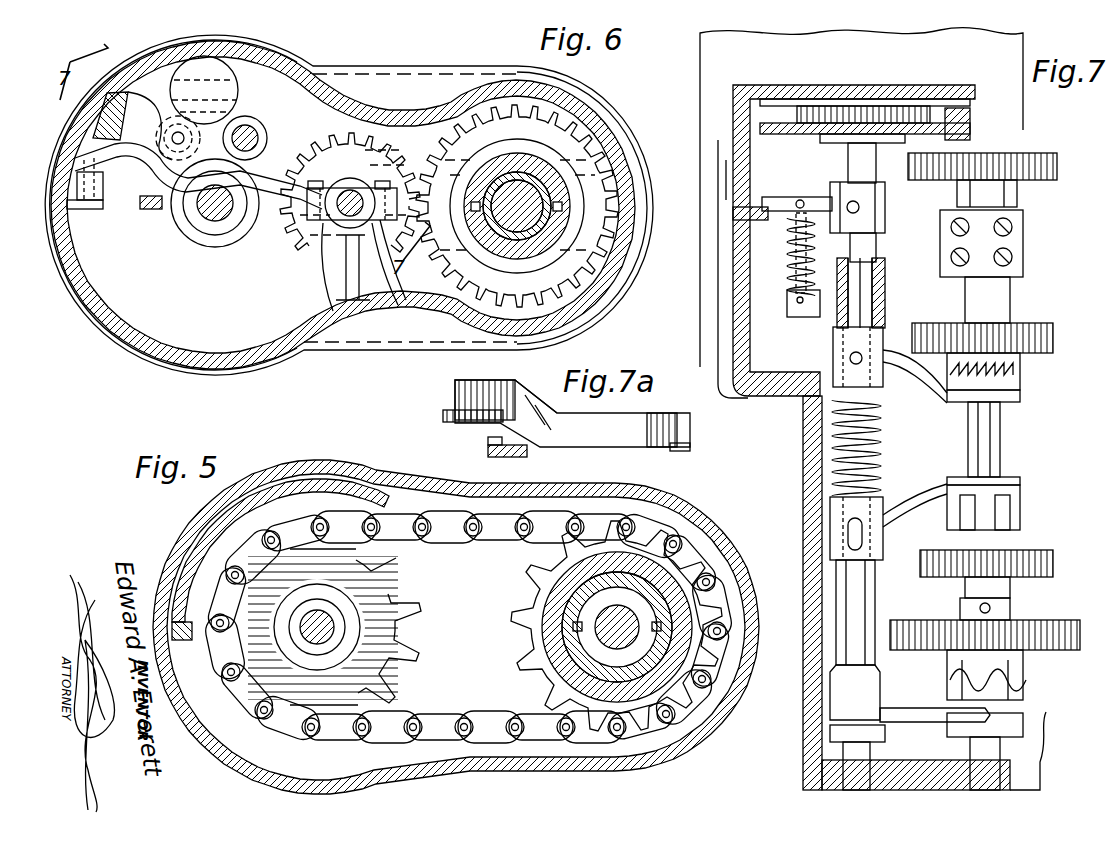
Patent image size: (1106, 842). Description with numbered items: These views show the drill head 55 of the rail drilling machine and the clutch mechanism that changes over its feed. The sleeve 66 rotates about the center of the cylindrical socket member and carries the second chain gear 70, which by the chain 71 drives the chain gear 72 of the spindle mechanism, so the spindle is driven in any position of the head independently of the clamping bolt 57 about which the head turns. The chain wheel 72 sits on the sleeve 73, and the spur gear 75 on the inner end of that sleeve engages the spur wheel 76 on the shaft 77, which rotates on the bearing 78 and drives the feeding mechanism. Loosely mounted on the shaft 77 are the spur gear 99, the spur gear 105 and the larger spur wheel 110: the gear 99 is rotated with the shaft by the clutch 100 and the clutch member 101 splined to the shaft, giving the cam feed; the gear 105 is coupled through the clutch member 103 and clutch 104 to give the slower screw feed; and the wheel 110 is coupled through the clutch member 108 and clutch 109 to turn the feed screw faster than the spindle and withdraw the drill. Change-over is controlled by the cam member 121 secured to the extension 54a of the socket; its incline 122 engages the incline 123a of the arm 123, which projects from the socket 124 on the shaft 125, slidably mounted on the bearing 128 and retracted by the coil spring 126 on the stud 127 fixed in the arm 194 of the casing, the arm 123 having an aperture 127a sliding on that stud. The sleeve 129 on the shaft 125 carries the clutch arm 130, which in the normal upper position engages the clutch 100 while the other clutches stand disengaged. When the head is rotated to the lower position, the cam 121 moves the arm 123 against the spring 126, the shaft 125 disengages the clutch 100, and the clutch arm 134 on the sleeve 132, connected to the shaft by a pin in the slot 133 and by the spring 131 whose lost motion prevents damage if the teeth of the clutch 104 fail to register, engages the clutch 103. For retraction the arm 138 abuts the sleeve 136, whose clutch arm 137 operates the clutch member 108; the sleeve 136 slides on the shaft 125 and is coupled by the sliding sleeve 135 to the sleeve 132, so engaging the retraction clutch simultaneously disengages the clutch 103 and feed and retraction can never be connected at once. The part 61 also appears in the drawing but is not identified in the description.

In FIG. 6, the extension of the socket 54a is at (74, 210).
In FIG. 5, the extension of the socket 54a is at (210, 524).
In FIG. 7, the extension of the socket 54a is at (733, 165).
In FIG. 6, the drill head 55 is at (435, 66).
In FIG. 5, the drill head 55 is at (550, 486).
In FIG. 7, the drill head 55 is at (728, 326).
In FIG. 6, the clamping bolt 57 is at (213, 224).
In FIG. 5, the clamping bolt 57 is at (321, 645).
In FIG. 7, the clamping bolt 57 is at (855, 158).
In FIG. 7, the support bracket 61 is at (803, 430).
In FIG. 5, the sleeve 66 is at (346, 648).
In FIG. 5, the second chain gear 70 is at (334, 627).
In FIG. 7, the second chain gear 70 is at (865, 131).
In FIG. 5, the chain 71 is at (428, 540).
In FIG. 5, the chain gear 72 is at (508, 600).
In FIG. 6, the sleeve 73 is at (492, 186).
In FIG. 5, the sleeve 73 is at (545, 624).
In FIG. 6, the spur gear 75 is at (517, 206).
In FIG. 6, the spur wheel 76 is at (350, 192).
In FIG. 7, the spur wheel 76 is at (1057, 166).
In FIG. 6, the shaft 77 is at (348, 198).
In FIG. 7, the shaft 77 is at (1000, 446).
In FIG. 6, the bearing 78 is at (307, 212).
In FIG. 7, the bearing 78 is at (1023, 243).
In FIG. 7, the spur gear 99 is at (1053, 342).
In FIG. 7, the clutch 100 is at (1020, 371).
In FIG. 7, the clutch member 101 is at (1020, 396).
In FIG. 7, the clutch member 103 is at (1020, 482).
In FIG. 7, the clutch 104 is at (1020, 515).
In FIG. 7, the spur gear 105 is at (1045, 558).
In FIG. 7, the clutch member 108 is at (1023, 718).
In FIG. 7, the clutch 109 is at (1023, 680).
In FIG. 7, the spur wheel 110 is at (1075, 624).
In FIG. 6, the cam member 121 is at (163, 187).
In FIG. 7A, the cam member 121 is at (572, 415).
In FIG. 5, the cam member 121 is at (186, 641).
In FIG. 7, the cam member 121 is at (733, 214).
In FIG. 6, the incline 122 is at (106, 118).
In FIG. 7A, the incline 122 is at (540, 422).
In FIG. 6, the arm 123 is at (152, 211).
In FIG. 7A, the arm 123 is at (488, 452).
In FIG. 7, the arm 123 is at (778, 197).
In FIG. 7A, the incline 123a is at (488, 440).
In FIG. 7, the socket 124 is at (885, 207).
In FIG. 6, the shaft 125 is at (256, 138).
In FIG. 7, the shaft 125 is at (876, 246).
In FIG. 7, the coil spring 126 is at (786, 239).
In FIG. 6, the stud 127 is at (180, 136).
In FIG. 7, the stud 127 is at (786, 264).
In FIG. 7, the aperture 127a is at (798, 201).
In FIG. 7, the bearing 128 is at (885, 291).
In FIG. 7, the sleeve 129 is at (833, 352).
In FIG. 7, the clutch arm 130 is at (930, 386).
In FIG. 7, the spring 131 is at (881, 437).
In FIG. 7, the sleeve 132 is at (883, 545).
In FIG. 7, the slot 133 is at (862, 532).
In FIG. 7, the clutch arm 134 is at (928, 490).
In FIG. 7, the sliding sleeve 135 is at (875, 595).
In FIG. 7, the sleeve 136 is at (880, 683).
In FIG. 7, the clutch arm 137 is at (935, 706).
In FIG. 7, the arm 138 is at (885, 733).
In FIG. 7, the arm of the casing 194 is at (795, 317).